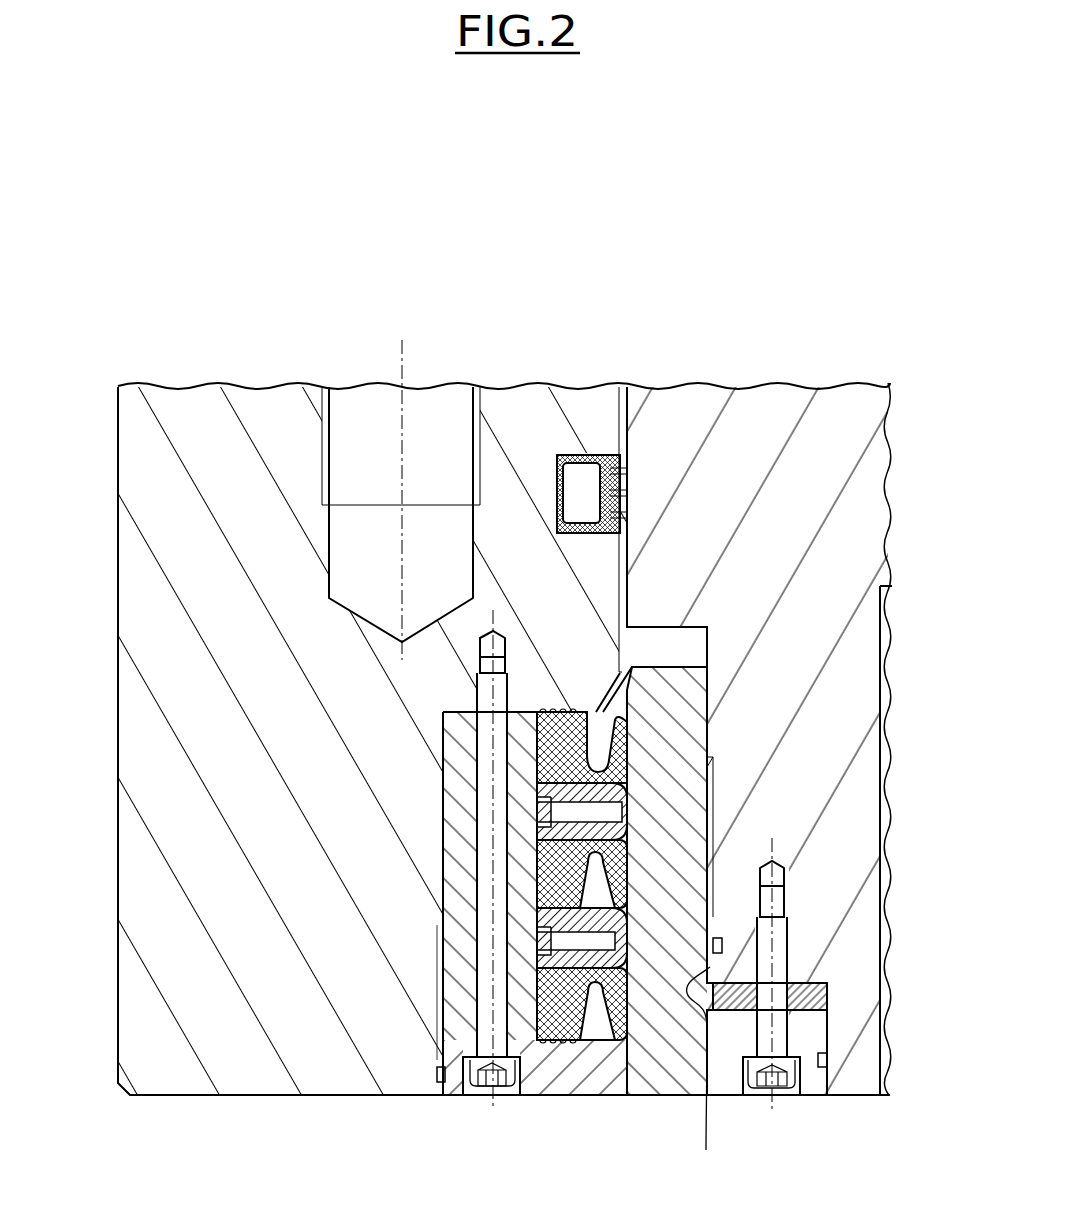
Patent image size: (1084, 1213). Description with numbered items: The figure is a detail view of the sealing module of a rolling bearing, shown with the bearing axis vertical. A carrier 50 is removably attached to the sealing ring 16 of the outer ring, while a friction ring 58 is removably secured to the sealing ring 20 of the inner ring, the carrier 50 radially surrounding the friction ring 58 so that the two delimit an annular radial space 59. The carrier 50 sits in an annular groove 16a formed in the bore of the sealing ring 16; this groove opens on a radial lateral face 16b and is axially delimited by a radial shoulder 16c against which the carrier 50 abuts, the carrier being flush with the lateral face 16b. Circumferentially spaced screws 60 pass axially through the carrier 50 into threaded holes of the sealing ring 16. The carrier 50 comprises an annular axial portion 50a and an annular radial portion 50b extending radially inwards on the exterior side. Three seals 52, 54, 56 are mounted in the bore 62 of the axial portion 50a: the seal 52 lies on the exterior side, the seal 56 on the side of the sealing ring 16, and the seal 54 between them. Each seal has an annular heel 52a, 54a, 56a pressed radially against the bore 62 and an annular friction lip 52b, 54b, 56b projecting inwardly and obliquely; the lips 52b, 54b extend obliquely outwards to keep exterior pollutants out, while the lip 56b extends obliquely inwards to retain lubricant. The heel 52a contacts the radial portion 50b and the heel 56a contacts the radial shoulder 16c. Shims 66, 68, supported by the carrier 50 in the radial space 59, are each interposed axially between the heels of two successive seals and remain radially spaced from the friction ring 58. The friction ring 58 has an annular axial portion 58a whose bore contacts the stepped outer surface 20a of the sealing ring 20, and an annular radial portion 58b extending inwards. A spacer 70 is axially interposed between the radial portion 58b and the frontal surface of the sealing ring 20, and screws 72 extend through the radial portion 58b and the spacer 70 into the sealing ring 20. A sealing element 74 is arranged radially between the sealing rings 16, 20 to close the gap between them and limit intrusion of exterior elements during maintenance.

The sealing ring of the outer ring 16 is at (190, 575).
The annular groove 16a is at (437, 1062).
The radial lateral face 16b is at (264, 1097).
The radial shoulder 16c is at (627, 723).
The sealing ring of the inner ring 20 is at (826, 909).
The outer surface 20a is at (708, 1073).
The carrier 50 is at (452, 882).
The annular axial portion 50a is at (465, 912).
The annular radial portion 50b is at (563, 1072).
The seal 52 is at (539, 991).
The annular heel 52a is at (545, 1018).
The annular friction lip 52b is at (596, 1012).
The seal 54 is at (542, 857).
The annular heel 54a is at (550, 885).
The annular friction lip 54b is at (628, 893).
The seal 56 is at (539, 719).
The annular heel 56a is at (545, 747).
The annular friction lip 56b is at (620, 737).
The friction ring 58 is at (677, 1080).
The annular axial portion 58a is at (677, 773).
The annular radial portion 58b is at (740, 1053).
The annular radial space 59 is at (563, 1070).
The screws 60 is at (484, 1032).
The bore 62 is at (553, 815).
The shim 66 is at (544, 954).
The shim 68 is at (557, 792).
The spacer 70 is at (813, 1000).
The screws 72 is at (784, 1040).
The sealing element 74 is at (583, 460).